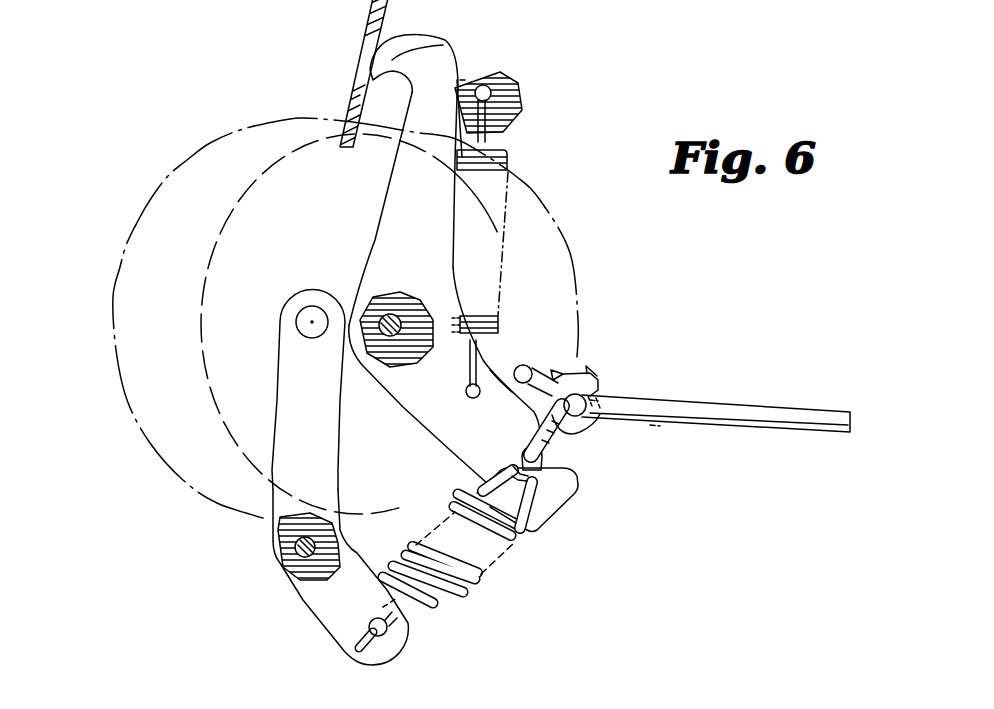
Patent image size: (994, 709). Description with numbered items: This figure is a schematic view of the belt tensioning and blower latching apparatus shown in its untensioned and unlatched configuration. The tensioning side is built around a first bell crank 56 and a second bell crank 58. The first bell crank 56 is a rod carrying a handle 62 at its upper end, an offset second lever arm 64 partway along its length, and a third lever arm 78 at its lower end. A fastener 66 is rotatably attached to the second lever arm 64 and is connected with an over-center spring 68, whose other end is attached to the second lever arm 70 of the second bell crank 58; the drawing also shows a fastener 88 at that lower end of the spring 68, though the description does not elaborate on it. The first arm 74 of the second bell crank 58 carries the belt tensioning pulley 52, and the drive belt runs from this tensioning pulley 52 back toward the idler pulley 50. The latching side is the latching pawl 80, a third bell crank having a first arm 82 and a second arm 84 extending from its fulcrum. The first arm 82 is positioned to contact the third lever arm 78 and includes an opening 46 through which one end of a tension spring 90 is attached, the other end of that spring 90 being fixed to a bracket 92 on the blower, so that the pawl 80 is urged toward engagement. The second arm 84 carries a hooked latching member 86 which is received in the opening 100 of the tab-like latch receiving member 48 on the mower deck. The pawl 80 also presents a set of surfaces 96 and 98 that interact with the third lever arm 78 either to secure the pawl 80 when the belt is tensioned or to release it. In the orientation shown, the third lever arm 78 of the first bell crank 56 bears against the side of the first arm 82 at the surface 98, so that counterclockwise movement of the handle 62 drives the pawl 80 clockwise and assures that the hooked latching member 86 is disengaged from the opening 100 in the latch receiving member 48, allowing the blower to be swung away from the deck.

The opening 46 is at (466, 391).
The latch receiving member 48 is at (350, 103).
The idler pulley 50 is at (218, 244).
The tensioning pulley 52 is at (124, 245).
The first bell crank 56 is at (612, 428).
The second bell crank 58 is at (264, 571).
The handle 62 is at (731, 408).
The second lever arm 64 is at (562, 440).
The fastener 66 is at (505, 449).
The spring 68 is at (478, 590).
The second lever arm 70 is at (328, 613).
The first arm 74 is at (300, 478).
The third lever arm 78 is at (528, 363).
The latching pawl 80 is at (419, 256).
The first arm 82 is at (448, 424).
The second arm 84 is at (433, 211).
The hooked latching member 86 is at (452, 48).
The bolt 88 is at (389, 629).
The tension spring 90 is at (505, 157).
The bracket 92 is at (518, 82).
The surface 96 is at (560, 500).
The surface 98 is at (509, 392).
The opening 100 is at (372, 47).